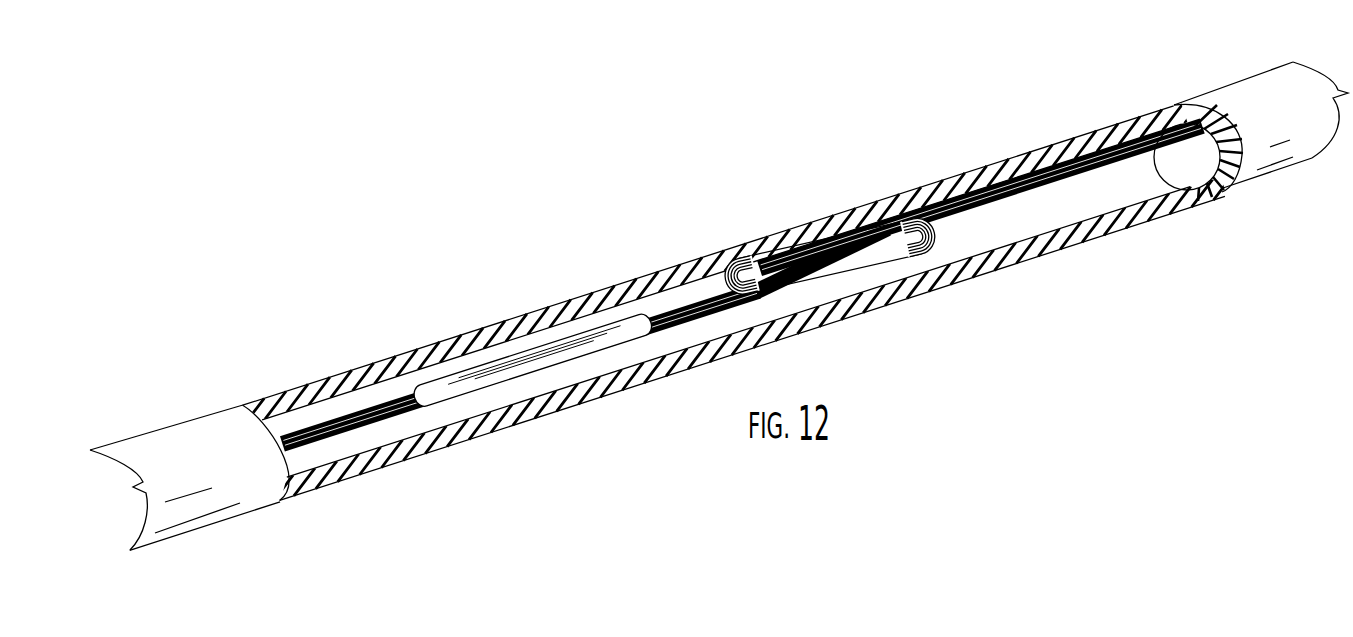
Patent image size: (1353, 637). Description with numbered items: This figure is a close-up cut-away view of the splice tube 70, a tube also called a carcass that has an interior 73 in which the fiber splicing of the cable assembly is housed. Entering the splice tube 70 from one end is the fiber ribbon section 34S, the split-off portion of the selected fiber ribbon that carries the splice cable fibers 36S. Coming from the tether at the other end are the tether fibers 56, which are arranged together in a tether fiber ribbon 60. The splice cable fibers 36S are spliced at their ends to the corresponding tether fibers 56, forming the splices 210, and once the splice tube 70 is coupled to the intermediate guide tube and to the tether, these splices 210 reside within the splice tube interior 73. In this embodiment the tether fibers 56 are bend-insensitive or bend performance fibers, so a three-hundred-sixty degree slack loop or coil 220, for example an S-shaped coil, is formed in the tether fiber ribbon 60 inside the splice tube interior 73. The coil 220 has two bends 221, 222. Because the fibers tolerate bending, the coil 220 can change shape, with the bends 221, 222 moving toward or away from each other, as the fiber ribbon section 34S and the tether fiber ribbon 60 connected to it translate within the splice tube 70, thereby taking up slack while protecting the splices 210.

The fiber ribbon section 34S is at (382, 396).
The splice cable fibers 36S is at (300, 427).
The tether fiber 56 is at (1117, 136).
The tether fiber ribbon 60 is at (1048, 192).
The splice tube 70 is at (1028, 146).
The splice tube interior 73 is at (659, 310).
The splices 210 is at (481, 366).
The slack loop or coil 220 is at (875, 258).
The bend 221 is at (724, 280).
The bend 222 is at (938, 240).